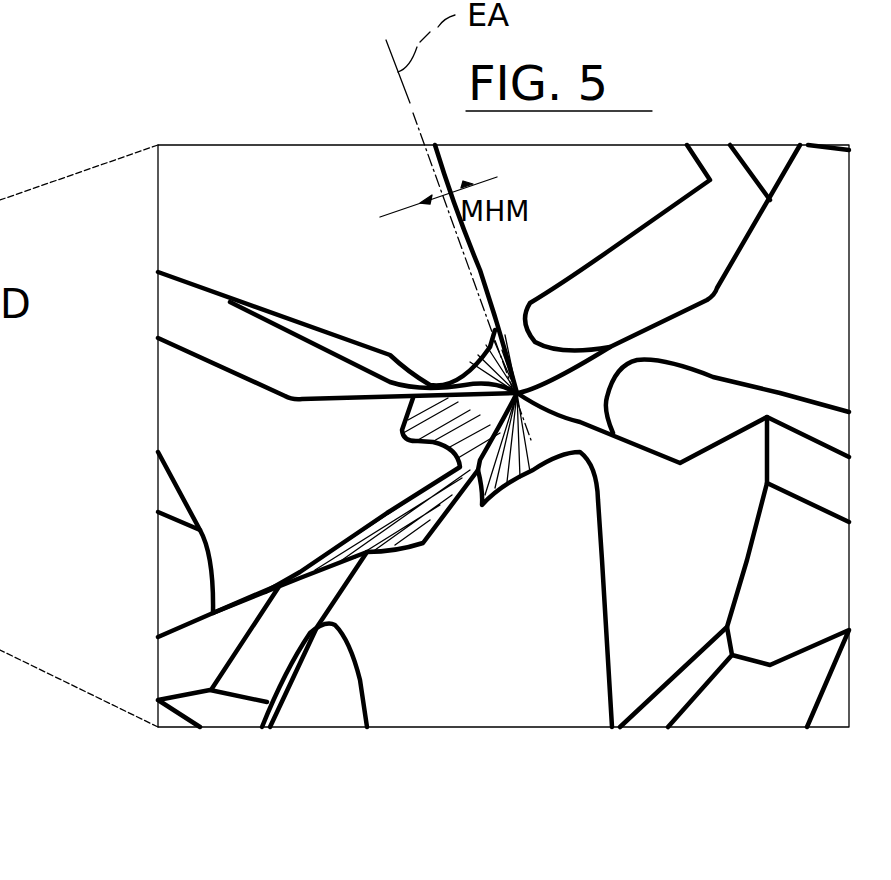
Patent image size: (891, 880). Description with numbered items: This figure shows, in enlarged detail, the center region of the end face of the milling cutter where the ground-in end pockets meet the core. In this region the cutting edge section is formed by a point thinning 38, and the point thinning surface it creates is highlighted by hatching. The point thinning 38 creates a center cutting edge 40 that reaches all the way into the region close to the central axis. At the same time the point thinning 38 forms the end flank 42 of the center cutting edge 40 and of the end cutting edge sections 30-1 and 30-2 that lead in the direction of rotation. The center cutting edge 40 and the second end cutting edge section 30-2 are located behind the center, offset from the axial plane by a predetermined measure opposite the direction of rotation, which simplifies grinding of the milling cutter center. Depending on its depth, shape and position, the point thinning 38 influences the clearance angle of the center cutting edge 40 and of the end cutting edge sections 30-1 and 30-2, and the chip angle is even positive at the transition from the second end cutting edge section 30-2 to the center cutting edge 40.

The first end cutting edge section 30-1 is at (232, 372).
The second end cutting edge section 30-2 is at (353, 400).
The center cutting edge 40 is at (460, 387).
The point thinning 38 is at (410, 532).
The end flank 42 is at (415, 482).